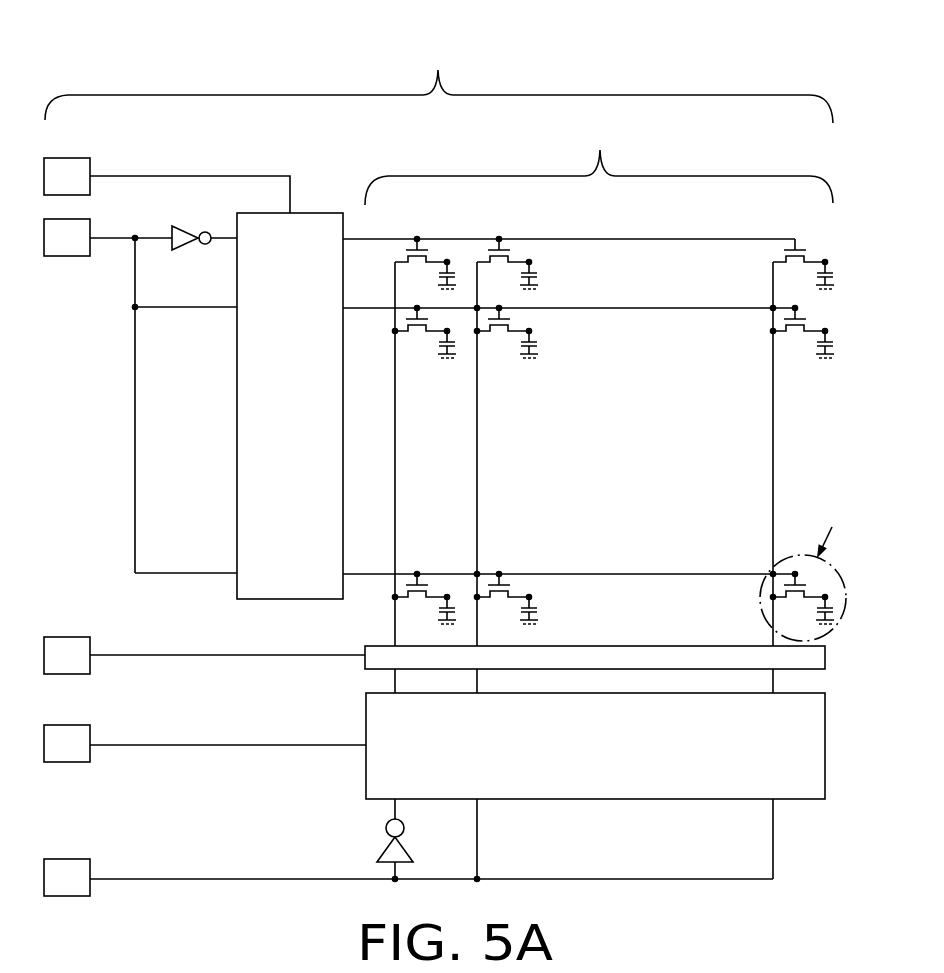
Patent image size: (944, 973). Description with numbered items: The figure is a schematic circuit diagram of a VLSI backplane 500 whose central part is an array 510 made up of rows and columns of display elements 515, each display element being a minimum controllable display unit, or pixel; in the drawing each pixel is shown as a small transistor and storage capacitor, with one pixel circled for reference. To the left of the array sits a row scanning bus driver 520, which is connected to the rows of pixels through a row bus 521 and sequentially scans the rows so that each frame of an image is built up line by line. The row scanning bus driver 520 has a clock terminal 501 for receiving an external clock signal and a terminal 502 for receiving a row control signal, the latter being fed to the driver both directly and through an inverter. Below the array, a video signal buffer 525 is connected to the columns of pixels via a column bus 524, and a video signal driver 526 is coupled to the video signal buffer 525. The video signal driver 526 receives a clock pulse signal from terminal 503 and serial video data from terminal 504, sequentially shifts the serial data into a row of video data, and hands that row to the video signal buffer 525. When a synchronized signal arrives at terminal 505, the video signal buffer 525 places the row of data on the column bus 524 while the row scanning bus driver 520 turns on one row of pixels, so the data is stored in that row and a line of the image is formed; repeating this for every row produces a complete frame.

The VLSI backplane 500 is at (439, 79).
The clock terminal 501 is at (65, 182).
The terminal for row control signal 502 is at (66, 240).
The terminal 503 is at (64, 876).
The terminal 504 is at (67, 745).
The terminal 505 is at (68, 648).
The array 510 is at (611, 498).
The display element 515 is at (840, 569).
The row scanning bus driver 520 is at (306, 390).
The row bus 521 is at (353, 308).
The column bus 524 is at (477, 622).
The video signal buffer 525 is at (810, 660).
The video signal driver 526 is at (613, 761).